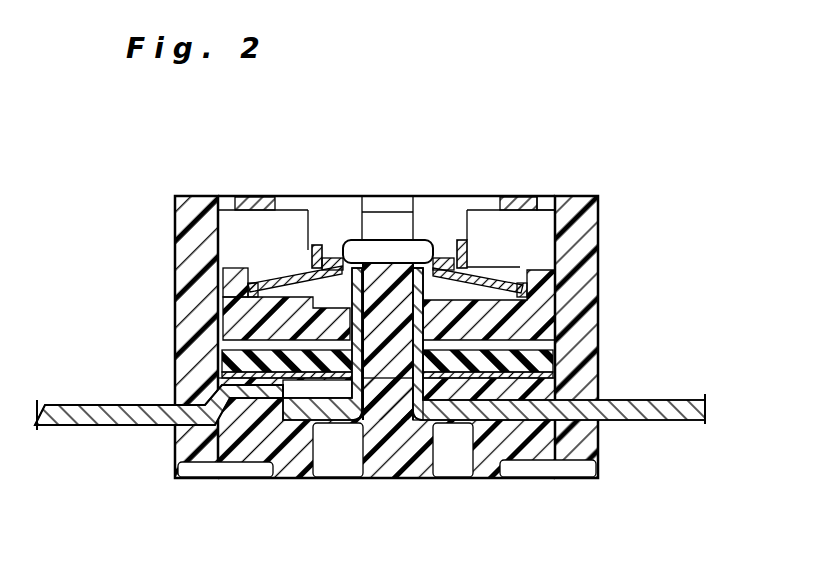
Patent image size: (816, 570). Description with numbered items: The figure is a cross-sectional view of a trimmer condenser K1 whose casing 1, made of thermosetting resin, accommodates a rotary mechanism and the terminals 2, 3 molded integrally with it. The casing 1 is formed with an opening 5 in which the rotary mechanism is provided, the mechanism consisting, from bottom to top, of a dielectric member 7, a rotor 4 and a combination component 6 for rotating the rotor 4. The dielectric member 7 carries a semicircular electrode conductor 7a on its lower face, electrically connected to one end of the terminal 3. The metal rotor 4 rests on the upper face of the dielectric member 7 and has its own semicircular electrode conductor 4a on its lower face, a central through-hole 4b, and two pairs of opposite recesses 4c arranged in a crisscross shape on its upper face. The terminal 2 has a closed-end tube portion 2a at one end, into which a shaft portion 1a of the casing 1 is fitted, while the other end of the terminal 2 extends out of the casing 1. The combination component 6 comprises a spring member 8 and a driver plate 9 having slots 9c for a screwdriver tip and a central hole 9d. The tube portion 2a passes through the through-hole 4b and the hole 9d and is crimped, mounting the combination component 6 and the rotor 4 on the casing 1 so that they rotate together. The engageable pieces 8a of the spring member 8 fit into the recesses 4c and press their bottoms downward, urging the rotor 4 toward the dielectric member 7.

The casing 1 is at (575, 372).
The shaft portion 1a is at (412, 440).
The terminal 2 is at (670, 412).
The tube portion 2a is at (388, 240).
The terminal 3 is at (112, 420).
The rotor 4 is at (570, 272).
The electrode conductor 4a is at (260, 342).
The through-hole 4b is at (318, 302).
The recesses 4c is at (560, 226).
The opening 5 is at (548, 202).
The combination component 6 is at (341, 203).
The dielectric member 7 is at (560, 352).
The electrode conductor 7a is at (240, 376).
The spring member 8 is at (300, 273).
The engageable pieces 8a is at (252, 290).
The driver plate 9 is at (340, 267).
The slots 9c is at (317, 245).
The hole 9d is at (395, 440).
The trimmer condenser K1 is at (522, 128).